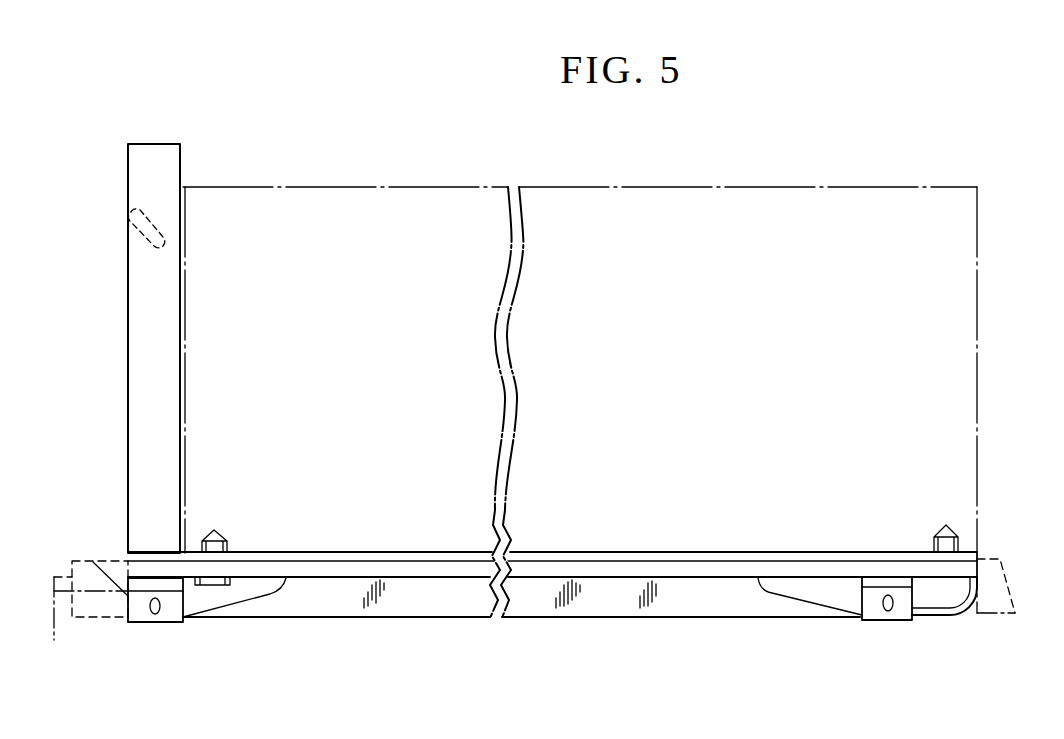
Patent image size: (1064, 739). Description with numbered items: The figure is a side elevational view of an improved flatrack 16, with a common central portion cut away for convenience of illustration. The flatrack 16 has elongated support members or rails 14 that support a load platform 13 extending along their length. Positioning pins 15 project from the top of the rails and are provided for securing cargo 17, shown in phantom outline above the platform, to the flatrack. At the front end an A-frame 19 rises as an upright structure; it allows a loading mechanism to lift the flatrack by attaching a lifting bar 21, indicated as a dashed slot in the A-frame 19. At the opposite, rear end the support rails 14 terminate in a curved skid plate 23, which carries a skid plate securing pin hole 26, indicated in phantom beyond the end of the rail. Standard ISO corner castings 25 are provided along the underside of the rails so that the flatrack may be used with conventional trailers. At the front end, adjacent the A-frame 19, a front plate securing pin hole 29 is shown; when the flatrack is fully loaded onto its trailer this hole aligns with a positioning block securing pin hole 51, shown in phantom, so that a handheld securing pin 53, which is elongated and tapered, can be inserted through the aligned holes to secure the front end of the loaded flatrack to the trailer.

The load platform 13 is at (777, 553).
The support rails 14 is at (738, 618).
The positioning pins 15 is at (218, 531).
The flatrack 16 is at (404, 634).
The cargo 17 is at (958, 430).
The A-frame 19 is at (128, 328).
The lifting bar 21 is at (130, 217).
The skid plate 23 is at (946, 617).
The ISO corner castings 25 is at (165, 622).
The skid plate securing pin hole 26 is at (975, 581).
The front plate securing pin hole 29 is at (128, 580).
The positioning block securing pin hole 51 is at (85, 578).
The handheld securing pin 53 is at (88, 622).